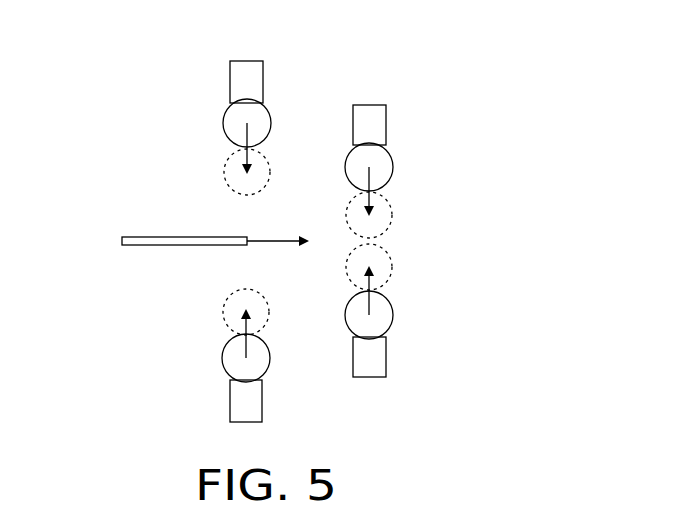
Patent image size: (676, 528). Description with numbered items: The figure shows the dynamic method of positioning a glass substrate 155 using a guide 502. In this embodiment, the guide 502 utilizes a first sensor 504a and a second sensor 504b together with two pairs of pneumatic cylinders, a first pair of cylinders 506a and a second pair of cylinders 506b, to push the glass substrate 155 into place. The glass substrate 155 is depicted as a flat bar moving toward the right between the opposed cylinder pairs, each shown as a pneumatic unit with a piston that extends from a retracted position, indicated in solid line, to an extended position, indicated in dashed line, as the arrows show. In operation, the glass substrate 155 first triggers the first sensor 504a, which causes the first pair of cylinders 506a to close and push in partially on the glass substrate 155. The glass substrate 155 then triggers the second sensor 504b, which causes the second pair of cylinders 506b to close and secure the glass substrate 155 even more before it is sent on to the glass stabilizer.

The guide 502 is at (526, 39).
The first pair of cylinders 506a is at (230, 77).
The second pair of cylinders 506b is at (386, 122).
The first sensor 504a is at (230, 407).
The second sensor 504b is at (386, 360).
The glass substrate 155 is at (122, 238).